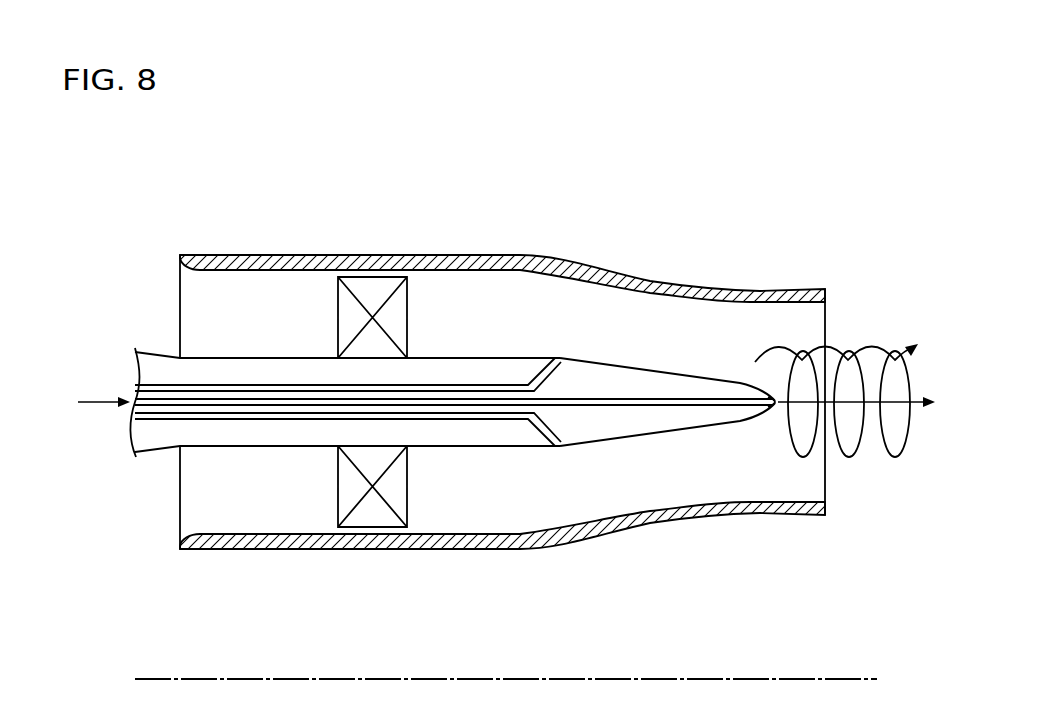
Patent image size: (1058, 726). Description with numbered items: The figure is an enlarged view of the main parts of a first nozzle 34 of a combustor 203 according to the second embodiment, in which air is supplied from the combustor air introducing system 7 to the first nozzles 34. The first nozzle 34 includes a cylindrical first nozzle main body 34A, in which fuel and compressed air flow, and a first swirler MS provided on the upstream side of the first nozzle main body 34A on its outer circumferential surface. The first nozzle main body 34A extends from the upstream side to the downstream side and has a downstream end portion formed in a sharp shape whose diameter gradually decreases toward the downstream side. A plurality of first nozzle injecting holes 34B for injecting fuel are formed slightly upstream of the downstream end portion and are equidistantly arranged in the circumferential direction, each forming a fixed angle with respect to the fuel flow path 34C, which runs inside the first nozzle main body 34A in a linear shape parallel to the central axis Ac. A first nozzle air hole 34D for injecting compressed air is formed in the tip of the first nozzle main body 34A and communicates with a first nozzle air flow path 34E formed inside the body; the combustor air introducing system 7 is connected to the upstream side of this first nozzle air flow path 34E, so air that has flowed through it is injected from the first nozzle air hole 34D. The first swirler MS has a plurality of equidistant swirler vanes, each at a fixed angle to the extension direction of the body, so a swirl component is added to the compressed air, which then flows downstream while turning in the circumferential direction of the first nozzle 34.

The combustor 203 is at (577, 197).
The first nozzle 34 is at (597, 333).
The first nozzle main body 34A is at (468, 387).
The first nozzle injecting hole 34B is at (560, 357).
The fuel flow path 34C is at (212, 385).
The first nozzle air hole 34D is at (778, 407).
The first nozzle air flow path 34E is at (263, 400).
The first swirler MS is at (371, 290).
The combustor air introducing system 7 is at (498, 400).
The central axis Ac is at (815, 678).